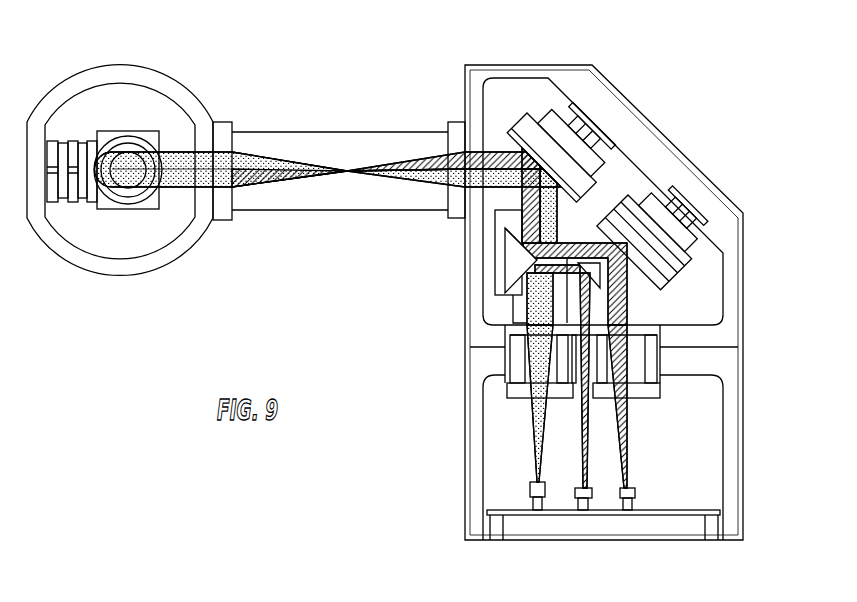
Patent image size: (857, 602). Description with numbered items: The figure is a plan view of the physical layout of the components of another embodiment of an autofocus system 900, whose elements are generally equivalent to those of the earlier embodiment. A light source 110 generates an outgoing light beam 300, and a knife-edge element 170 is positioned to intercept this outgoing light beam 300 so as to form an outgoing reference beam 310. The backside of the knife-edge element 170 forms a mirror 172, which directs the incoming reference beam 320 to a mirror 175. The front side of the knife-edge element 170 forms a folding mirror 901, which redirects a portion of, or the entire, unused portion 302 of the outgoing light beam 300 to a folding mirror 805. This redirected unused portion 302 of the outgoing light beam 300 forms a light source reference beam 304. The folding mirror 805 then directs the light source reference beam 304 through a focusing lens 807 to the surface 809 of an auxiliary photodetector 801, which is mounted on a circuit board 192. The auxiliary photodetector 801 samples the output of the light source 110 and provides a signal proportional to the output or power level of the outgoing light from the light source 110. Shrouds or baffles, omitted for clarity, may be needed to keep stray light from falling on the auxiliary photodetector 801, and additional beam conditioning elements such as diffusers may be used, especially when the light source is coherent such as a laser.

The autofocus system 900 is at (727, 78).
The incoming reference beam 320 is at (526, 200).
The outgoing reference beam 310 is at (522, 212).
The mirror 172 is at (503, 227).
The knife-edge element 170 is at (505, 263).
The folding mirror 901 is at (515, 290).
The unused portion 302 is at (528, 318).
The outgoing light beam 300 is at (543, 408).
The folding mirror 805 is at (585, 258).
The light source reference beam 304 is at (590, 323).
The mirror 175 is at (668, 283).
The focusing lens 807 is at (592, 383).
The light source 110 is at (530, 490).
The surface 809 is at (577, 486).
The auxiliary photodetector 801 is at (572, 492).
The circuit board 192 is at (595, 515).